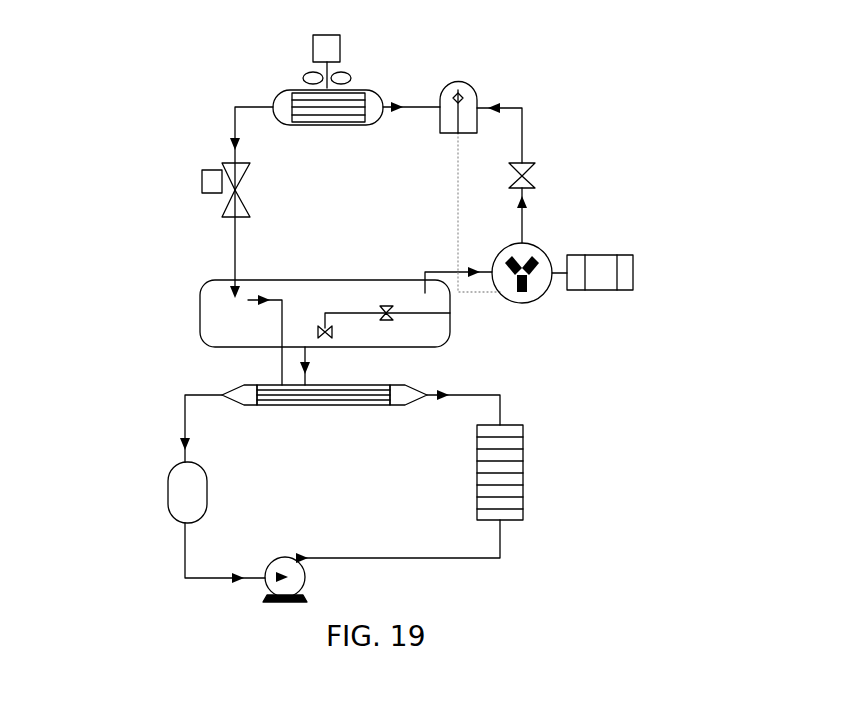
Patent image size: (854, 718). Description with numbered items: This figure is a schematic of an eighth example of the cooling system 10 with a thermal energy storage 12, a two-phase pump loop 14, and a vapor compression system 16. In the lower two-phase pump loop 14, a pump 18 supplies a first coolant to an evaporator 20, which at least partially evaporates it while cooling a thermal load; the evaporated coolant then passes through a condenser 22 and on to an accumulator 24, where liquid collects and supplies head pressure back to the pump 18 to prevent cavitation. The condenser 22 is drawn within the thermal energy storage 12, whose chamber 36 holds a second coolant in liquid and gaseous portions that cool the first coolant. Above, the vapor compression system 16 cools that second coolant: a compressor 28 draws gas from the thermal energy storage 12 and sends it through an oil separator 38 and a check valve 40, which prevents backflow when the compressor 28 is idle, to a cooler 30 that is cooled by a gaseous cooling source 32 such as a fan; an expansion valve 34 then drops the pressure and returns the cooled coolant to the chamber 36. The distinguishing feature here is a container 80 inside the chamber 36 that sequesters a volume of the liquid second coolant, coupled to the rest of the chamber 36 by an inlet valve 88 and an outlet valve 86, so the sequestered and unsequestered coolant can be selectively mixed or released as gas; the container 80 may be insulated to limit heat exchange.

The cooling system 10 is at (124, 88).
The thermal energy storage 12 is at (203, 309).
The two-phase pump loop 14 is at (172, 580).
The vapor compression system 16 is at (202, 122).
The pump 18 is at (306, 583).
The evaporator 20 is at (525, 511).
The condenser 22 is at (235, 406).
The accumulator 24 is at (168, 480).
The compressor 28 is at (545, 299).
The cooler 30 is at (368, 92).
The gaseous cooling source 32 is at (340, 38).
The expansion valve 34 is at (202, 174).
The chamber 36 is at (330, 290).
The oil separator 38 is at (471, 90).
The check valve 40 is at (529, 178).
The container 80 is at (350, 312).
The outlet valve 86 is at (386, 306).
The inlet valve 88 is at (330, 338).